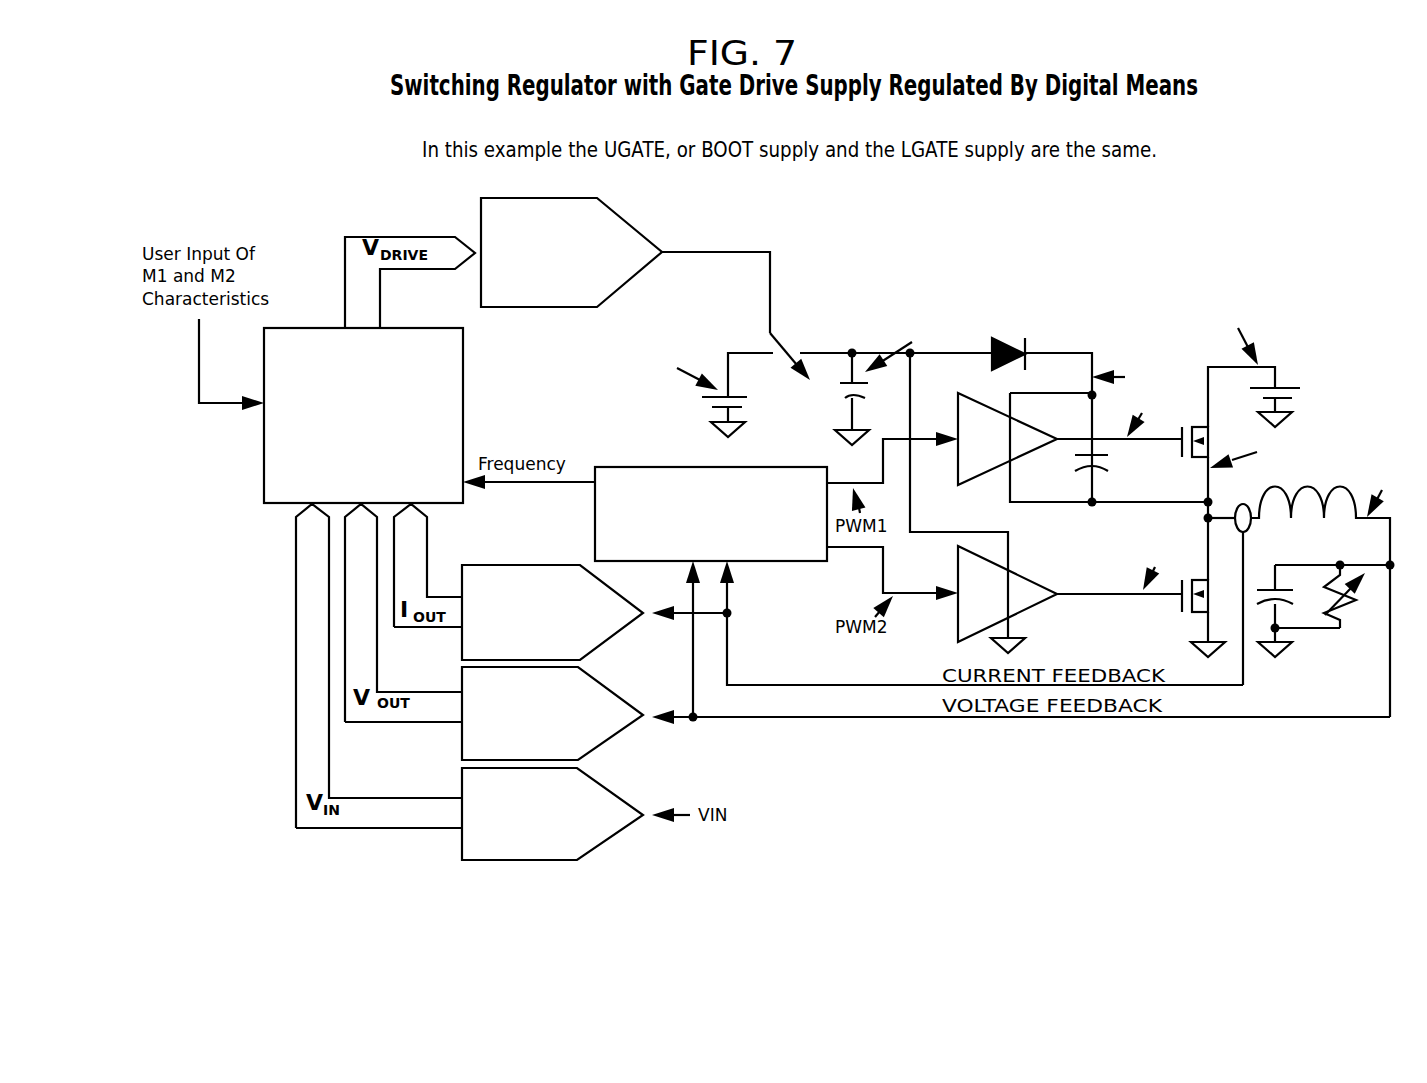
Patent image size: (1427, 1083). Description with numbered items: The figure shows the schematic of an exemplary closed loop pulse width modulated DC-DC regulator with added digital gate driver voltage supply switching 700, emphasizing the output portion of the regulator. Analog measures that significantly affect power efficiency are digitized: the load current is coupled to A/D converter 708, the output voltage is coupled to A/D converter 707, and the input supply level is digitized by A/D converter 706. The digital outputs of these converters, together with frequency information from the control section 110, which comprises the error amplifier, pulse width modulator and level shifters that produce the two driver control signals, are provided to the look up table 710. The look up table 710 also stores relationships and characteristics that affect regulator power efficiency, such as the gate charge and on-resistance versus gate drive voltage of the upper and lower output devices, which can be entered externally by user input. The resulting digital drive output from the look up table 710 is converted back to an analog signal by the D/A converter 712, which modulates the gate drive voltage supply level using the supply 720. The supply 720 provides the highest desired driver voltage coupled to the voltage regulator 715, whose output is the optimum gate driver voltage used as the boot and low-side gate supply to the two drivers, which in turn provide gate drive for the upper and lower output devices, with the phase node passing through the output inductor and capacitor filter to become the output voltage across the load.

The closed loop pulse width modulated DC-DC regulator with digital gate driver volta 700 is at (1000, 259).
The look up table 710 is at (264, 453).
The D/A converter 712 is at (625, 228).
The voltage regulator 715 is at (788, 337).
The supply 720 is at (750, 398).
The control section 110 is at (682, 468).
The A/D converter 708 is at (598, 647).
The A/D converter 707 is at (597, 748).
The A/D converter 706 is at (547, 863).